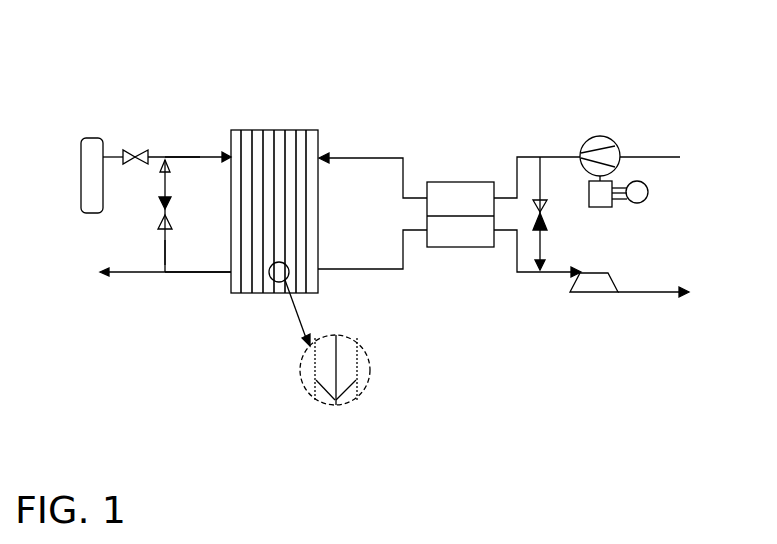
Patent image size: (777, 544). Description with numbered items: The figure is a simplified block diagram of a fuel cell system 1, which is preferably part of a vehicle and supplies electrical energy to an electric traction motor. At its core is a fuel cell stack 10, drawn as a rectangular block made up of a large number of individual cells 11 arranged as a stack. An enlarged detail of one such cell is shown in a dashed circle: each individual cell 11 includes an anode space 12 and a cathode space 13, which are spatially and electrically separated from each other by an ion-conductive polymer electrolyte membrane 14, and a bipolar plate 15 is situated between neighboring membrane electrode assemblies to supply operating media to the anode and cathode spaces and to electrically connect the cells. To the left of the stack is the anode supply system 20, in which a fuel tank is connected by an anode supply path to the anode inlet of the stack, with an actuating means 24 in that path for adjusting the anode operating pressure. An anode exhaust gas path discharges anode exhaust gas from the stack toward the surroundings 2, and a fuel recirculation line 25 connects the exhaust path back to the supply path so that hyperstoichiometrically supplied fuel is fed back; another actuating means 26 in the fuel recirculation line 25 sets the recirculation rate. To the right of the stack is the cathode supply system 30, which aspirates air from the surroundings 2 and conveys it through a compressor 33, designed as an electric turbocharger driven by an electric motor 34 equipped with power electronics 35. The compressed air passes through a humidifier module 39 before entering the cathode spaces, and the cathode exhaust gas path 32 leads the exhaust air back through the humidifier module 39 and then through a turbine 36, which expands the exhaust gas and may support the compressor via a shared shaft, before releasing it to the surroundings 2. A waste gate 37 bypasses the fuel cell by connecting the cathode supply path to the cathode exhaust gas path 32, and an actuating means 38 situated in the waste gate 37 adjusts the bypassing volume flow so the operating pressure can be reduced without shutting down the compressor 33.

The fuel cell system 1 is at (414, 18).
The surroundings 2 is at (73, 287).
The fuel cell stack 10 is at (259, 82).
The individual cell 11 is at (256, 136).
The anode space 12 is at (327, 397).
The cathode space 13 is at (346, 389).
The polymer electrolyte membrane 14 is at (337, 400).
The bipolar plate 15 is at (314, 380).
The anode supply system 20 is at (140, 80).
The actuating means 24 is at (128, 154).
The fuel recirculation line 25 is at (163, 252).
The actuating means 26 is at (163, 203).
The cathode supply system 30 is at (481, 108).
The cathode exhaust gas path 32 is at (631, 289).
The compressor 33 is at (606, 122).
The electric motor 34 is at (598, 192).
The power electronics 35 is at (646, 192).
The turbine 36 is at (597, 286).
The waste gate 37 is at (538, 254).
The actuating means 38 is at (546, 227).
The humidifier module 39 is at (452, 236).